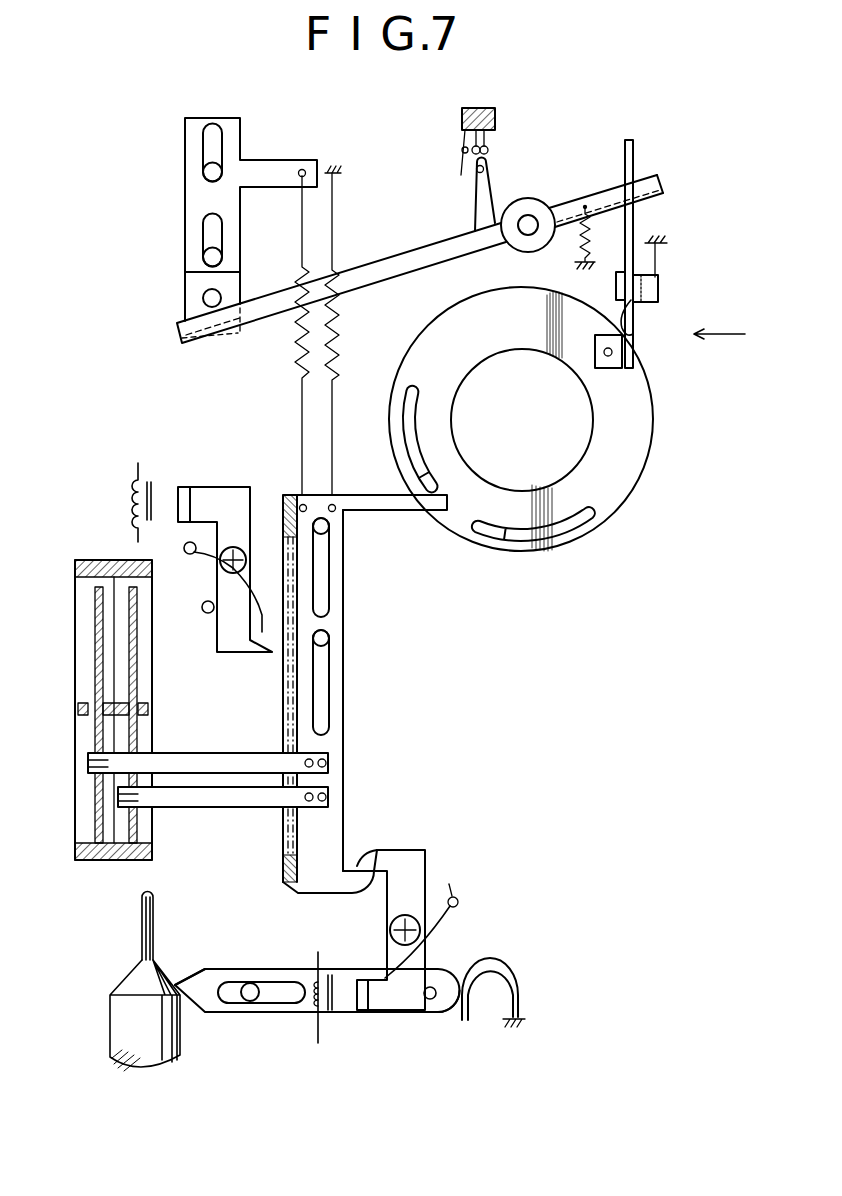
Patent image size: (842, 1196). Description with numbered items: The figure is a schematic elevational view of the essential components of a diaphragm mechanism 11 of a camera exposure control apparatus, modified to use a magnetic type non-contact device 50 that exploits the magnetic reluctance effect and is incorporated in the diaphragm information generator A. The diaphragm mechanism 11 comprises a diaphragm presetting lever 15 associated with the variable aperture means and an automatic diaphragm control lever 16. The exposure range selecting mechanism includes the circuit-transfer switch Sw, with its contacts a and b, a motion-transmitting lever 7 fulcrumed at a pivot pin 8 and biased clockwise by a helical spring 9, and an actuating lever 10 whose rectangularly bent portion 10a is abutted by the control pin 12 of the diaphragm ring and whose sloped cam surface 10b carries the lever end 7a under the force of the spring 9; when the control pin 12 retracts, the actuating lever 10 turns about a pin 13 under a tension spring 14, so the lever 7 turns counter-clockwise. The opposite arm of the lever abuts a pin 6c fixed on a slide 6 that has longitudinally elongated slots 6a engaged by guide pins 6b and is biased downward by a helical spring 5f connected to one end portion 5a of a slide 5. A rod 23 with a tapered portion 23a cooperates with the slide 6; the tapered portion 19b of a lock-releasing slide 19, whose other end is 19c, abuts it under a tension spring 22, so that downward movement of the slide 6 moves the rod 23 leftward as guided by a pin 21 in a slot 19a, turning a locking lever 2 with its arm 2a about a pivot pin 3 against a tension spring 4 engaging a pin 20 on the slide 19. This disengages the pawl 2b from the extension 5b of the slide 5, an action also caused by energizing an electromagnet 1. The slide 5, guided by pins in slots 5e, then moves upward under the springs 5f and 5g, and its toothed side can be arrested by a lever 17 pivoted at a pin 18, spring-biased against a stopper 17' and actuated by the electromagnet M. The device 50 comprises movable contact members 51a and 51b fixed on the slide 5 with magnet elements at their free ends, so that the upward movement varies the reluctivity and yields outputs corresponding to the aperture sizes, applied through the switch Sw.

The electromagnet 1 is at (318, 1022).
The locking lever 2 is at (410, 860).
The projection of bracket 2a is at (362, 1012).
The pawl 2b is at (369, 852).
The pivot pin 3 is at (390, 934).
The tension spring 4 is at (432, 912).
The slide 5 is at (343, 683).
The top arm of slide plate 5a is at (420, 508).
The extension of the slide 5b is at (364, 888).
The slots 5e is at (330, 574).
The helical spring 5f is at (296, 338).
The spring 5g is at (334, 262).
The slide 6 is at (240, 137).
The longitudinally elongated slots 6a is at (215, 232).
The guide pins 6b is at (206, 259).
The pin 6c is at (204, 298).
The motion-transmitting lever 7 is at (420, 252).
The lever end 7a is at (663, 192).
The pivot pin 8 is at (533, 215).
The helical spring 9 is at (591, 251).
The actuating lever 10 is at (633, 318).
The rectangularly bent portion 10a is at (605, 369).
The sloped cam surface 10b is at (634, 170).
The diaphragm mechanism 11 is at (434, 318).
The control pin 12 is at (614, 352).
The pin 13 is at (660, 292).
The tension spring 14 is at (658, 264).
The diaphragm presetting lever 15 is at (428, 476).
The automatic diaphragm control lever 16 is at (496, 535).
The lever 17 is at (220, 569).
The stopper 17' is at (188, 593).
The pin 18 is at (245, 555).
The lock-releasing slide 19 is at (437, 1014).
The slot 19a is at (234, 1002).
The tapered portion 19b is at (200, 978).
The rounded end 19c is at (450, 1014).
The pin 20 is at (436, 986).
The pin 21 is at (258, 998).
The tension spring 22 is at (508, 968).
The rod 23 is at (144, 908).
The tapered portion 23a is at (140, 984).
The magnetic type non-contact device 50 is at (78, 780).
The movable contact member 51a is at (194, 808).
The movable contact member 51b is at (184, 752).
The electromagnet M is at (138, 470).
The circuit-transfer switch Sw is at (463, 119).
The switch contact a is at (489, 150).
The switch contact b is at (461, 142).
The diaphragm information generator A is at (719, 320).